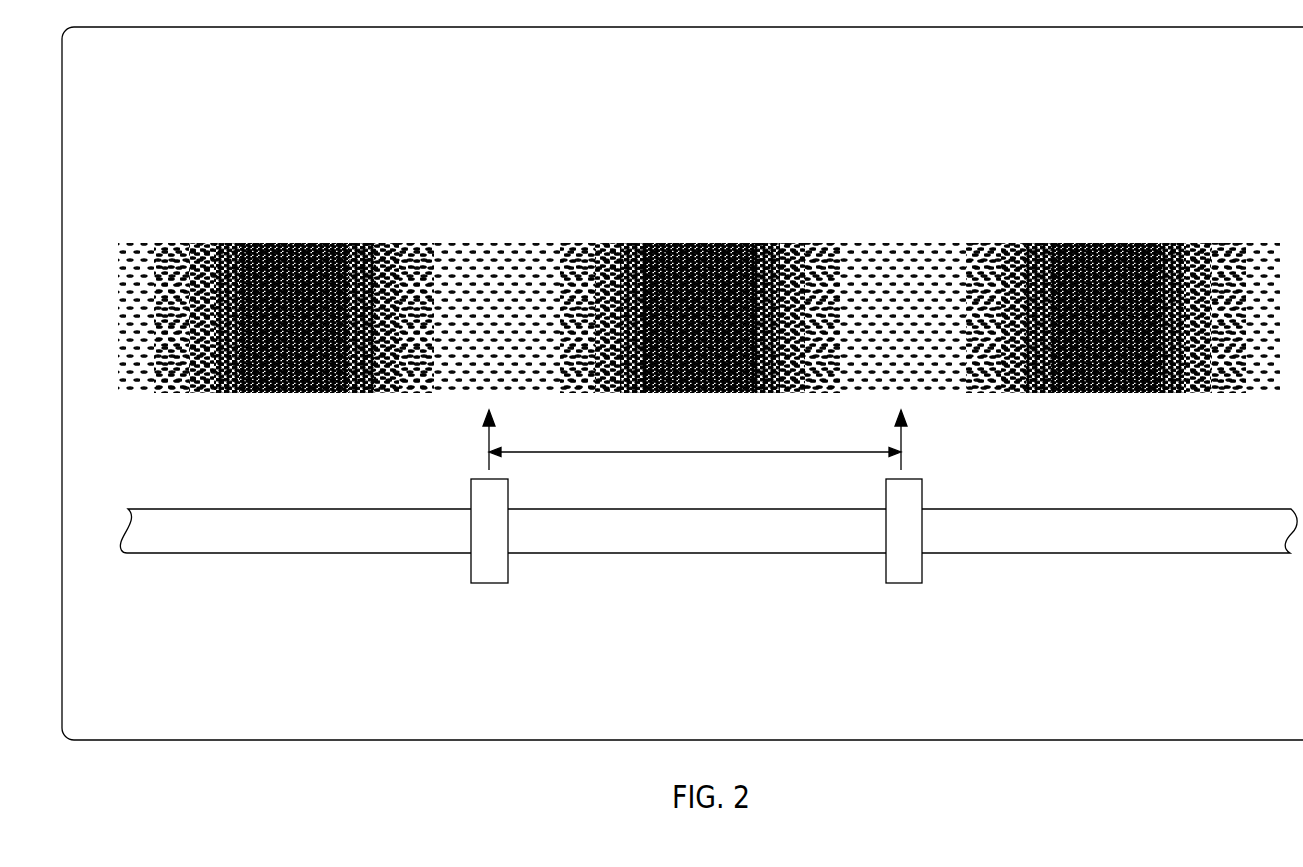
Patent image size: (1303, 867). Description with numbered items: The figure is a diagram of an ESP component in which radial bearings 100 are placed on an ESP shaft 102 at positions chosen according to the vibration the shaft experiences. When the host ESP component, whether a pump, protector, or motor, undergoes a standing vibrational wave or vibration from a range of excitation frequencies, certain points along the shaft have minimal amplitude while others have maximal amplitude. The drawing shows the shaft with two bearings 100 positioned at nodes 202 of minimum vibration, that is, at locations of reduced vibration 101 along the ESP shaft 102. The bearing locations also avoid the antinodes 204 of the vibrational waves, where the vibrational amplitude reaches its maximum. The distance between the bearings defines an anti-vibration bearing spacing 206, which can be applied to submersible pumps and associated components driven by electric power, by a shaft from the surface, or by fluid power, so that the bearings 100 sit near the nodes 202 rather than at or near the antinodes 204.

The radial bearing 100 is at (488, 587).
The location of reduced vibration 101 is at (503, 599).
The ESP shaft 102 is at (200, 556).
The node 202 is at (480, 230).
The antinode 204 is at (277, 230).
The anti-vibration bearing spacing 206 is at (695, 441).